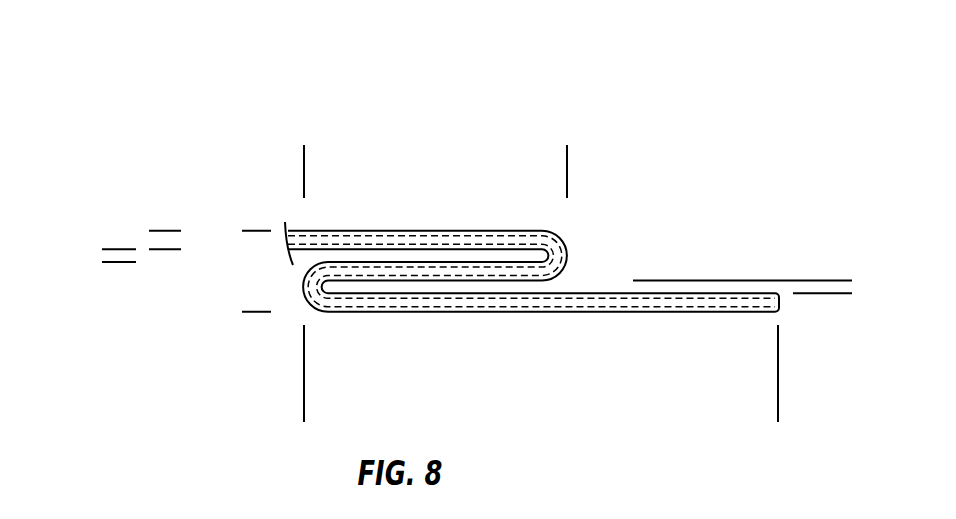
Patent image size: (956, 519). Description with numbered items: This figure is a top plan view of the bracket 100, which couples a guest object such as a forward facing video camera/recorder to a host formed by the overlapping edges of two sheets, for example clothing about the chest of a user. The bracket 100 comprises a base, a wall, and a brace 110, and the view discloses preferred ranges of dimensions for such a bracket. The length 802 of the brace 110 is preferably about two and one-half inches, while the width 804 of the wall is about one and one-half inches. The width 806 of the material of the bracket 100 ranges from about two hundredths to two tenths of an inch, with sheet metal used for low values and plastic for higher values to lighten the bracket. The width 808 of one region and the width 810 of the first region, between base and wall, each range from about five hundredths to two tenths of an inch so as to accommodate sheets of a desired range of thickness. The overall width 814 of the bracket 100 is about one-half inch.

The bracket 100 is at (113, 48).
The brace 110 is at (650, 312).
The length of brace 802 is at (778, 386).
The width of wall 804 is at (567, 175).
The width of material of bracket 806 is at (165, 261).
The width of region 808 is at (833, 306).
The width of region 810 is at (120, 274).
The width of bracket 814 is at (257, 324).